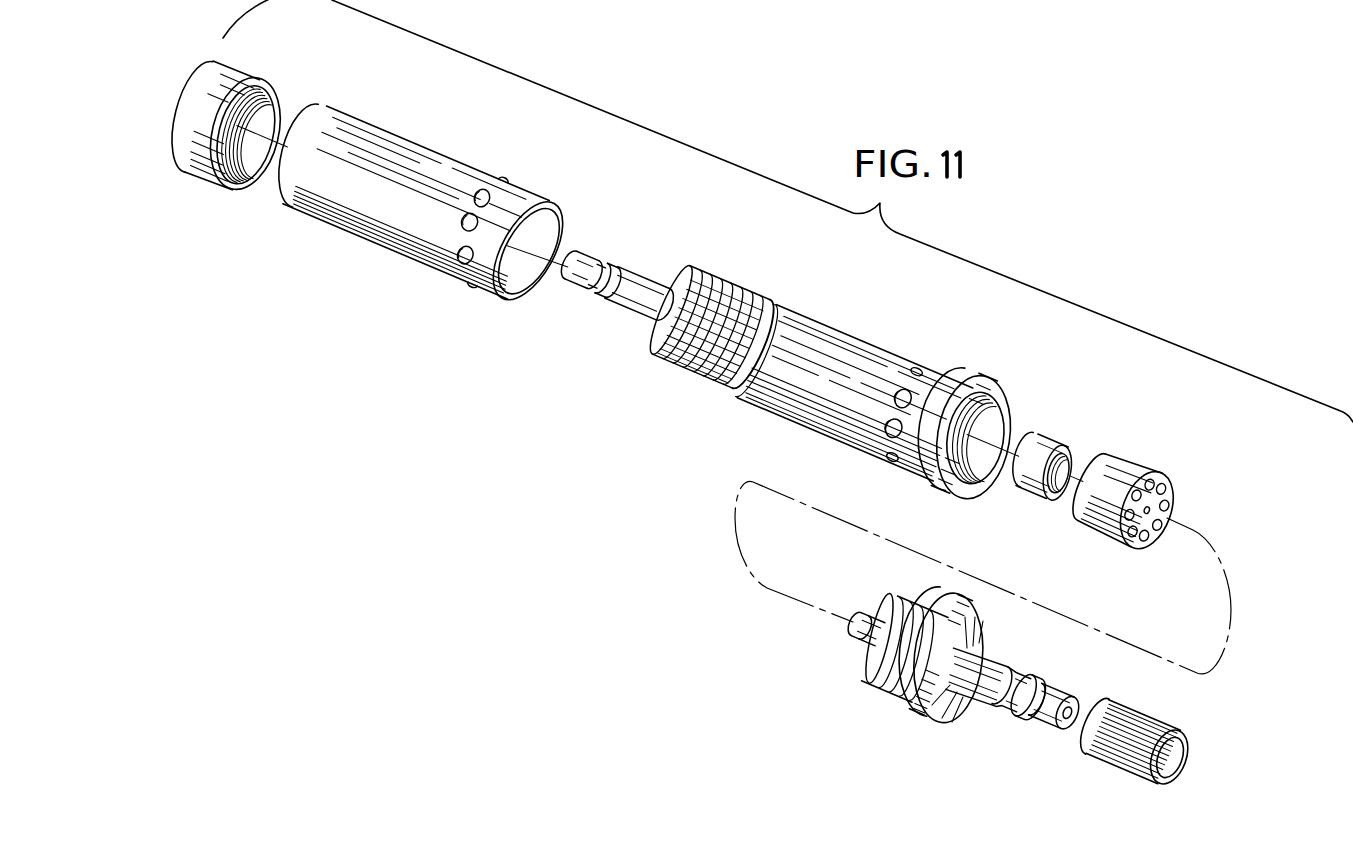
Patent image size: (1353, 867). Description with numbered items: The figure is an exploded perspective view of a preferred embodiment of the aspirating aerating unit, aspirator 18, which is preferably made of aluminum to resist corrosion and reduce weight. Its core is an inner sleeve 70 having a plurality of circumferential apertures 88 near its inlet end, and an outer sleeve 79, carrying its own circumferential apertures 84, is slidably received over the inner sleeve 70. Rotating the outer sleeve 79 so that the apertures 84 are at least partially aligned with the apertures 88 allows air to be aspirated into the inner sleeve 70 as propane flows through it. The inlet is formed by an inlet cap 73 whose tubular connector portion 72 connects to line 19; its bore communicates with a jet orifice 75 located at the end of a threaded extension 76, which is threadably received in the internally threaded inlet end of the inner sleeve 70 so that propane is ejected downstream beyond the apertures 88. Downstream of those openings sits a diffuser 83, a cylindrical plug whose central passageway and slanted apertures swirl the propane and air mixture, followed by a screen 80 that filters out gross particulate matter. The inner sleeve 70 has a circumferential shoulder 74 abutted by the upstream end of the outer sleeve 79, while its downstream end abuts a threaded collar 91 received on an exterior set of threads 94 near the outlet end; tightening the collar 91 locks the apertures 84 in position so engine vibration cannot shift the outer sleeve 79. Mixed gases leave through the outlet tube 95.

The aspirating aerating unit 18 is at (603, 322).
The line 19 is at (1132, 720).
The inner sleeve 70 is at (814, 389).
The tubular connector portion 72 is at (984, 672).
The inlet cap 73 is at (958, 604).
The circumferential shoulder 74 is at (982, 373).
The jet orifice 75 is at (848, 636).
The threaded extension 76 is at (874, 682).
The outer sleeve 79 is at (416, 203).
The screen 80 is at (1043, 446).
The diffuser 83 is at (1120, 464).
The circumferential apertures 84 is at (480, 192).
The circumferential apertures 88 is at (900, 394).
The threaded collar 91 is at (232, 80).
The exterior set of threads 94 is at (720, 282).
The outlet tube 95 is at (586, 254).